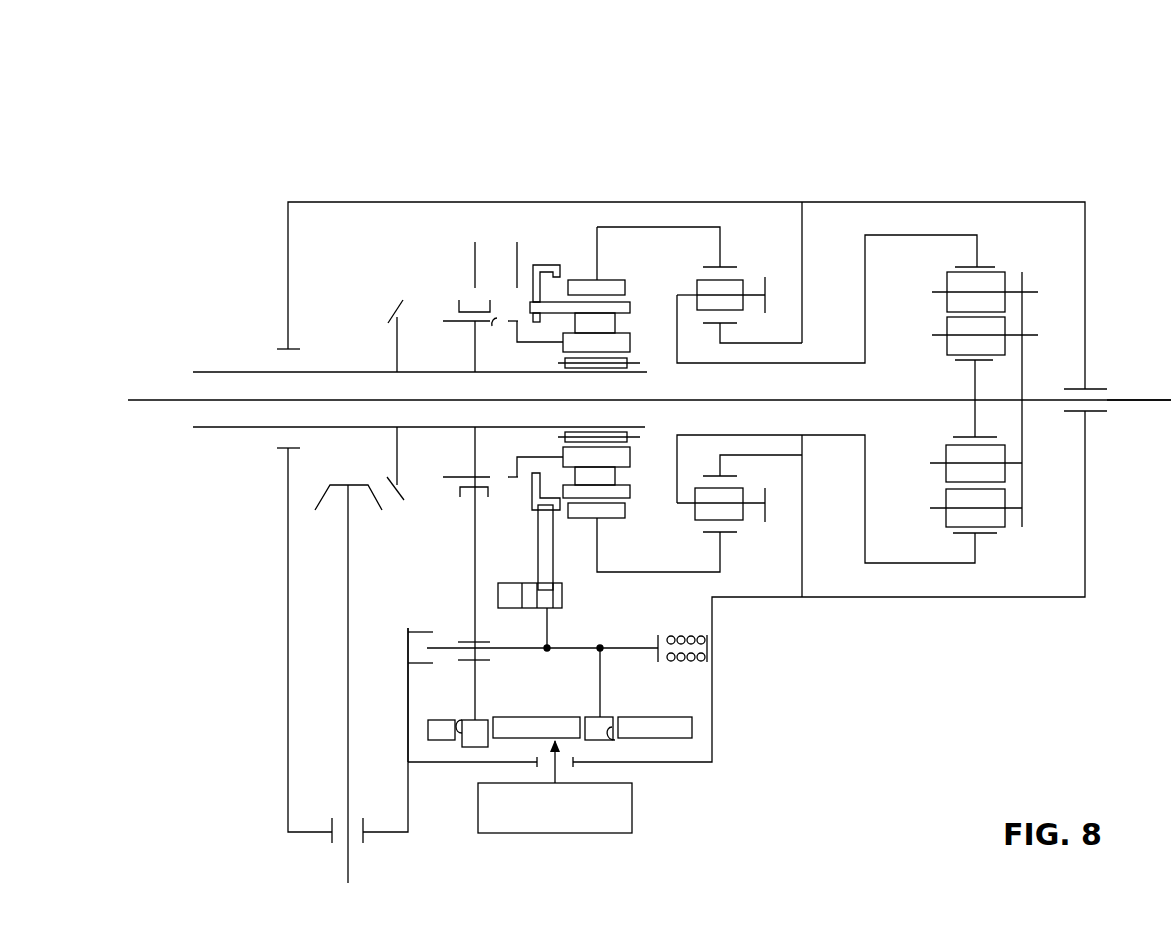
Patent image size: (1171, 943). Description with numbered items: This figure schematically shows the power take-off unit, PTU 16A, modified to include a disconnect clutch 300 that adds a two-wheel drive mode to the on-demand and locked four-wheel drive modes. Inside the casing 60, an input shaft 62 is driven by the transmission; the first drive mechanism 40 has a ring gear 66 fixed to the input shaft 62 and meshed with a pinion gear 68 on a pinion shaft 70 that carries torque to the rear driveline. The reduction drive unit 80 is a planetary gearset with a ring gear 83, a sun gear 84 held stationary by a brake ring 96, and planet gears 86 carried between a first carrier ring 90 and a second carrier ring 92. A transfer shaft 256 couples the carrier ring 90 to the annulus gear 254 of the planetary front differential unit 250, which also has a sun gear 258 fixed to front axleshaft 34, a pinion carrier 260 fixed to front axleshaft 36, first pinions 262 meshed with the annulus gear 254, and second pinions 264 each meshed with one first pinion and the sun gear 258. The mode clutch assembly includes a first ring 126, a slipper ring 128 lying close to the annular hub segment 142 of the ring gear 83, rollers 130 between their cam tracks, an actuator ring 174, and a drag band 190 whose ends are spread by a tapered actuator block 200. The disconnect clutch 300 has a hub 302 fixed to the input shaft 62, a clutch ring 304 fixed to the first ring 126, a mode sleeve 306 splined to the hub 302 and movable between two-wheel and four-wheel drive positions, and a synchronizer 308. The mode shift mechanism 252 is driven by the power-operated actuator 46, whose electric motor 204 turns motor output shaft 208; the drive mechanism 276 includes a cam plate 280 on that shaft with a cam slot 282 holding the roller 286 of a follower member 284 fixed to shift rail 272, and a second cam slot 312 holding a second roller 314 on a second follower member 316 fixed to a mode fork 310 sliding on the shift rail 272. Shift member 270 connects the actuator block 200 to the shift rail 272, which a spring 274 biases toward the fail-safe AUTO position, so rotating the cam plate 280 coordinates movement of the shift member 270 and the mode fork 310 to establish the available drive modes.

The PTU 16A is at (692, 472).
The front axleshaft 34 is at (160, 400).
The front axleshaft 36 is at (1146, 400).
The first drive mechanism 40 is at (378, 248).
The power-operated clutch actuator 46 is at (620, 842).
The casing 60 is at (416, 202).
The input shaft 62 is at (212, 370).
The ring gear 66 is at (397, 350).
The pinion gear 68 is at (342, 485).
The pinion shaft 70 is at (348, 550).
The reduction drive unit 80 is at (727, 211).
The ring gear 83 is at (653, 227).
The sun gear 84 is at (747, 455).
The planet gears 86 is at (730, 288).
The first carrier ring 90 is at (675, 306).
The second carrier ring 92 is at (767, 497).
The brake ring 96 is at (802, 267).
The first ring 126 is at (577, 345).
The slipper ring 128 is at (622, 490).
The rollers 130 is at (607, 322).
The annular hub segment 142 is at (612, 512).
The actuator ring 174 is at (553, 265).
The drag band 190 is at (540, 528).
The actuator block 200 is at (564, 590).
The electric motor 204 is at (624, 808).
The motor output shaft 208 is at (557, 773).
The front differential unit 250 is at (1042, 221).
The mode shift mechanism 252 is at (461, 799).
The annulus gear 254 is at (922, 233).
The transfer shaft 256 is at (740, 365).
The sun gear 258 is at (970, 365).
The pinion carrier 260 is at (1023, 310).
The first pinions 262 is at (952, 300).
The second pinions 264 is at (957, 451).
The shift member 270 is at (545, 628).
The shift rail 272 is at (510, 650).
The spring 274 is at (680, 635).
The drive mechanism 276 is at (684, 704).
The cam plate 280 is at (682, 727).
The cam slot 282 is at (615, 740).
The follower member 284 is at (600, 682).
The roller 286 is at (598, 728).
The disconnect clutch 300 is at (452, 298).
The hub 302 is at (475, 350).
The clutch ring 304 is at (542, 344).
The mode sleeve 306 is at (460, 487).
The synchronizer 308 is at (500, 477).
The mode fork 310 is at (475, 585).
The second cam slot 312 is at (462, 720).
The second roller 314 is at (472, 747).
The second follower member 316 is at (475, 683).